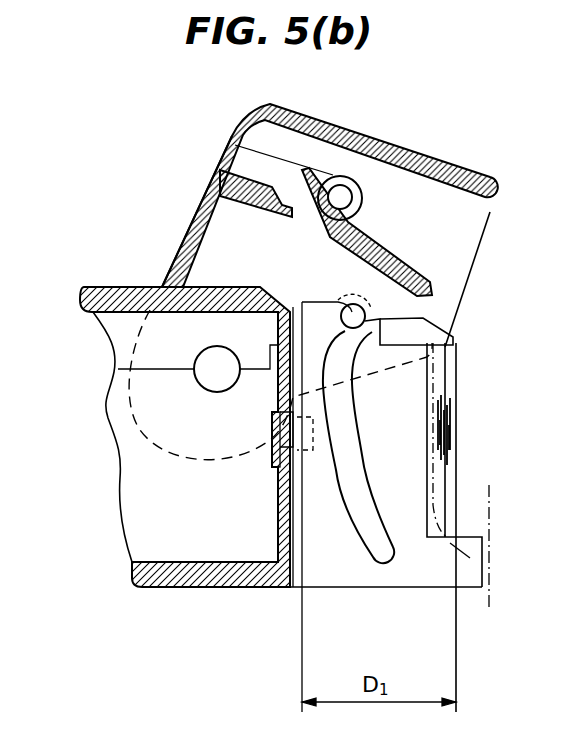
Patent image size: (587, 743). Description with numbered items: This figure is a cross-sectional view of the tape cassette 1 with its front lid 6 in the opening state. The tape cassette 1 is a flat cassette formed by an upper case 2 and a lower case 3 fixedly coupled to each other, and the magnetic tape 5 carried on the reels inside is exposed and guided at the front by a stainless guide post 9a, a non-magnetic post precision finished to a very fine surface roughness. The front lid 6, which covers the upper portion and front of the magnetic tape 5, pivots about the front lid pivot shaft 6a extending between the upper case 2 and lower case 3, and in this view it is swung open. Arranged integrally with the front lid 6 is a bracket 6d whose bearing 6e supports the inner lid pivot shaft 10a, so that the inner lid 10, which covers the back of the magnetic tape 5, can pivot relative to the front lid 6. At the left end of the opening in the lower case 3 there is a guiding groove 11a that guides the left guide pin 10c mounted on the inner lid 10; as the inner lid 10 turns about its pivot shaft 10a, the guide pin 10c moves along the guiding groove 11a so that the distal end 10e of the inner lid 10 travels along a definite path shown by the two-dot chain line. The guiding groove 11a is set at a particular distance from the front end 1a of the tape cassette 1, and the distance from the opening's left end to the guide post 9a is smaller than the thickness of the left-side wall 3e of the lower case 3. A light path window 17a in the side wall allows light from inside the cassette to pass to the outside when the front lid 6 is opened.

The tape cassette 1 is at (90, 648).
The front end 1a is at (490, 582).
The upper case 2 is at (92, 290).
The lower case 3 is at (184, 578).
The left-side wall 3e is at (412, 575).
The magnetic tape 5 is at (457, 407).
The front lid 6 is at (433, 158).
The front lid pivot shaft 6a is at (213, 357).
The bracket 6d is at (250, 162).
The bearing 6e is at (350, 188).
The stainless guide post 9a is at (450, 443).
The inner lid 10 is at (377, 252).
The inner lid pivot shaft 10a is at (338, 197).
The left guide pin 10c is at (340, 304).
The distal end 10e is at (363, 313).
The guiding groove 11a is at (380, 550).
The light path window 17a is at (278, 455).